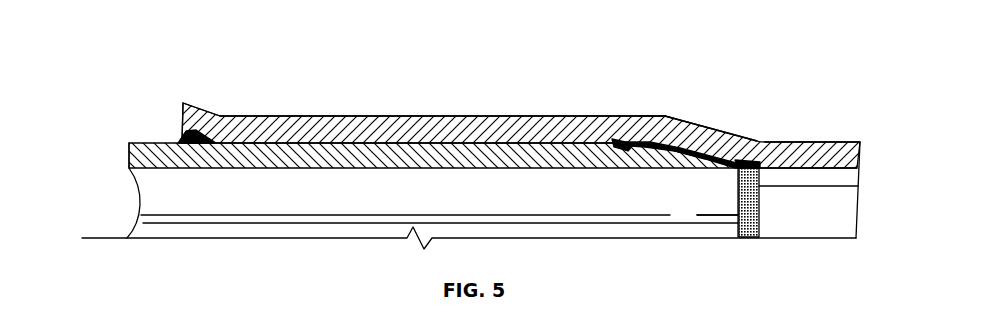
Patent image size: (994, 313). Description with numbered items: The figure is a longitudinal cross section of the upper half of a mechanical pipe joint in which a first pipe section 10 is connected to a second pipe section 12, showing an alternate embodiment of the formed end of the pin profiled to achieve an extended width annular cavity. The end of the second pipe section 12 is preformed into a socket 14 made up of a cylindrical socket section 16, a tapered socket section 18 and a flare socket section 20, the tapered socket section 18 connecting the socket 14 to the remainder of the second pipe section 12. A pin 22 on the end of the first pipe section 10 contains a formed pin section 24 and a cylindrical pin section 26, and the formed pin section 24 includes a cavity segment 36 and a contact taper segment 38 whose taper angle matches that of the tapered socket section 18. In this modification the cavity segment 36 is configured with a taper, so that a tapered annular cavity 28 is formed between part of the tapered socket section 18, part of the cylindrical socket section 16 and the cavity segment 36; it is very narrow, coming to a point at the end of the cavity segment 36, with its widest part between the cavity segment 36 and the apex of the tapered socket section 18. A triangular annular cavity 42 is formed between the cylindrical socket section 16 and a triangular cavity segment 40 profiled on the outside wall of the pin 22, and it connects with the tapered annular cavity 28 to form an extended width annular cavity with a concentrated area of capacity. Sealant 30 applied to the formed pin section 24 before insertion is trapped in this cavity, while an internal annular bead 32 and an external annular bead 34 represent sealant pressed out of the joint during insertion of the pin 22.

The first pipe section 10 is at (137, 142).
The second pipe section 12 is at (813, 160).
The socket 14 is at (508, 110).
The cylindrical socket section 16 is at (337, 116).
The tapered socket section 18 is at (723, 140).
The flare socket section 20 is at (204, 113).
The pin 22 is at (468, 177).
The formed pin section 24 is at (685, 169).
The cylindrical pin section 26 is at (351, 160).
The tapered annular cavity 28 is at (647, 145).
The sealant 30 is at (665, 140).
The internal annular bead 32 is at (744, 160).
The external annular bead 34 is at (190, 131).
The cavity segment 36 is at (670, 161).
The contact taper segment 38 is at (723, 168).
The triangular cavity segment 40 is at (630, 146).
The triangular annular cavity 42 is at (618, 140).